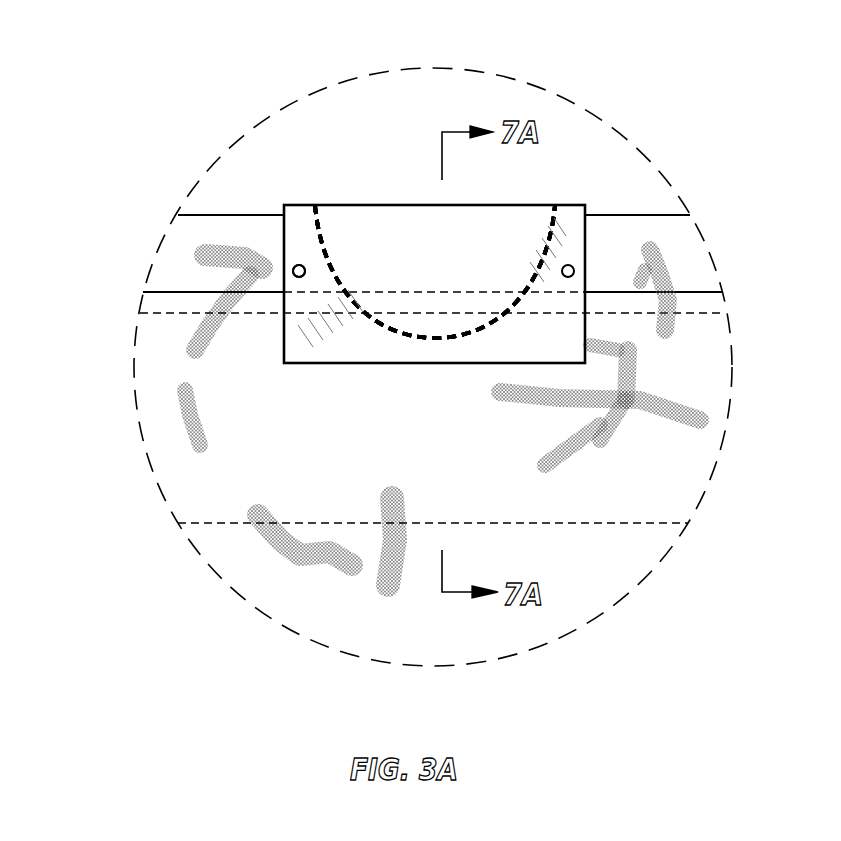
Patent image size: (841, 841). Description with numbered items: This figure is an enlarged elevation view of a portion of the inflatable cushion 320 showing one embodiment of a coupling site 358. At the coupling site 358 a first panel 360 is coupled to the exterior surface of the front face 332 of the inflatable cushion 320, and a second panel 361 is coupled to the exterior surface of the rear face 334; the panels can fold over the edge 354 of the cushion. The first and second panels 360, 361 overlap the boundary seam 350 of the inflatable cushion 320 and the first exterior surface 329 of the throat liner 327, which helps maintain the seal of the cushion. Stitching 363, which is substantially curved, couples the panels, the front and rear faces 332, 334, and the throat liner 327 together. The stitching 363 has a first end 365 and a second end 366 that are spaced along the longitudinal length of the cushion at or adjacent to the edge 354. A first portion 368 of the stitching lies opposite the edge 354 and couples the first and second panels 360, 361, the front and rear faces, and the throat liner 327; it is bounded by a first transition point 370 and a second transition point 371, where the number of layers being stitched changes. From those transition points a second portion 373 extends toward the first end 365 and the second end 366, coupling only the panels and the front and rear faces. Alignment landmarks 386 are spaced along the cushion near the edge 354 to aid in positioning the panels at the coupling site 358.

The inflatable cushion 320 is at (617, 208).
The throat liner 327 is at (648, 491).
The first exterior surface 329 is at (697, 314).
The front face 332 is at (680, 258).
The rear face 334 is at (698, 278).
The boundary seam 350 is at (173, 291).
The edge 354 is at (250, 215).
The coupling site 358 is at (530, 188).
The first panel 360 is at (548, 352).
The second panel 361 is at (553, 368).
The stitching 363 is at (325, 220).
The first end 365 is at (316, 205).
The second end 366 is at (555, 205).
The first portion 368 is at (433, 338).
The first transition point 370 is at (363, 313).
The second transition point 371 is at (503, 313).
The second portion 373 is at (289, 272).
The alignment landmark 386 is at (288, 275).